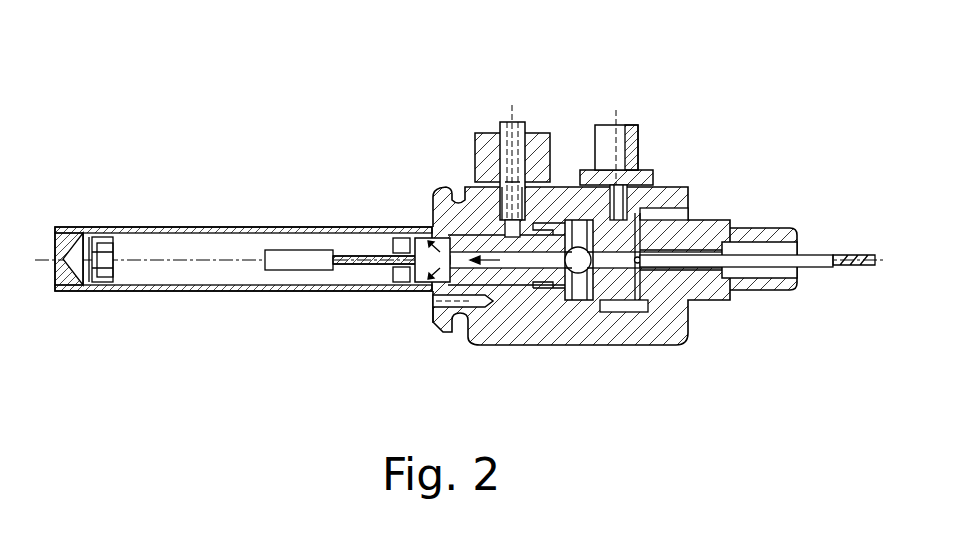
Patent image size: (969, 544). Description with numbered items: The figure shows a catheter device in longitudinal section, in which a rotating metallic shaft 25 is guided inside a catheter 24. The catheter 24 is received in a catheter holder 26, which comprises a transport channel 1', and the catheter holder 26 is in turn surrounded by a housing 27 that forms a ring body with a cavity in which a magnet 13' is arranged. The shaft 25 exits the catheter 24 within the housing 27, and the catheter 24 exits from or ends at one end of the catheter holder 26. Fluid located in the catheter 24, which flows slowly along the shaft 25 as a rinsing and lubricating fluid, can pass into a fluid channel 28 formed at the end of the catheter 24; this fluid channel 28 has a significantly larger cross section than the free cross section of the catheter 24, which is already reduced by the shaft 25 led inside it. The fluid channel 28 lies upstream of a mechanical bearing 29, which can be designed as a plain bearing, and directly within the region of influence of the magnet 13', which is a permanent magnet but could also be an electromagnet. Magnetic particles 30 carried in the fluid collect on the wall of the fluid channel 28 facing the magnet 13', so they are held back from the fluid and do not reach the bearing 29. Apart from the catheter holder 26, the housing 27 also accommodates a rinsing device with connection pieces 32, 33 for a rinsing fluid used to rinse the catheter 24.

The transport channel 1' is at (581, 238).
The magnet 13' is at (451, 364).
The catheter 24 is at (808, 253).
The rotating metallic shaft 25 is at (862, 266).
The catheter holder 26 is at (720, 220).
The housing 27 is at (566, 300).
The fluid channel 28 is at (428, 232).
The mechanical bearing 29 is at (398, 284).
The magnetic particles 30 is at (416, 285).
The connection piece 32 is at (620, 125).
The connection piece 33 is at (513, 120).